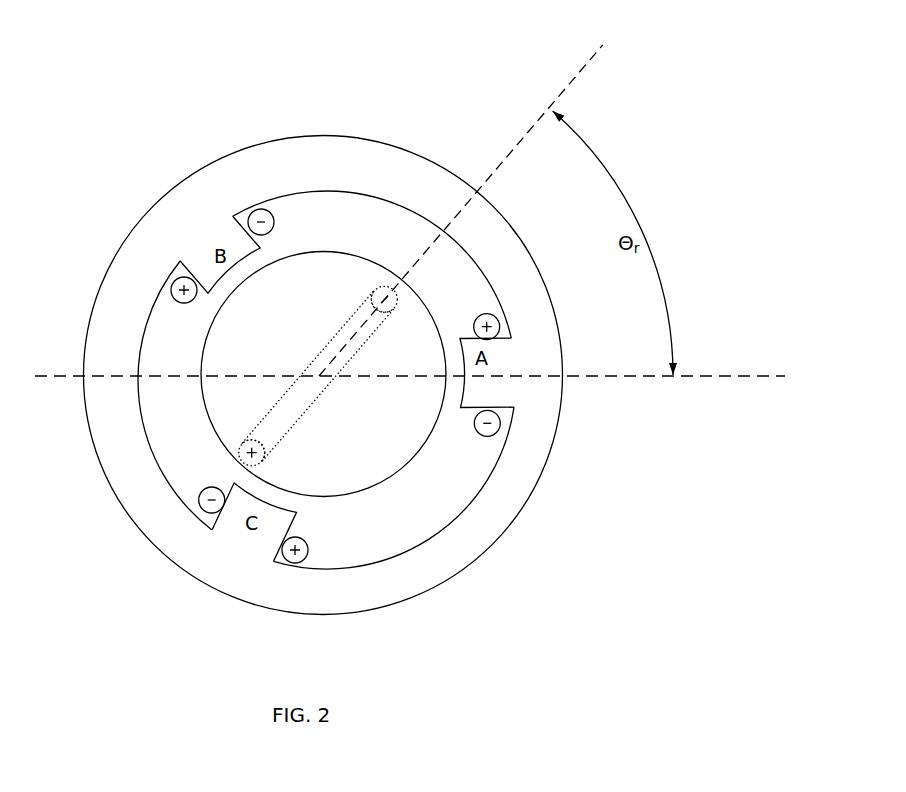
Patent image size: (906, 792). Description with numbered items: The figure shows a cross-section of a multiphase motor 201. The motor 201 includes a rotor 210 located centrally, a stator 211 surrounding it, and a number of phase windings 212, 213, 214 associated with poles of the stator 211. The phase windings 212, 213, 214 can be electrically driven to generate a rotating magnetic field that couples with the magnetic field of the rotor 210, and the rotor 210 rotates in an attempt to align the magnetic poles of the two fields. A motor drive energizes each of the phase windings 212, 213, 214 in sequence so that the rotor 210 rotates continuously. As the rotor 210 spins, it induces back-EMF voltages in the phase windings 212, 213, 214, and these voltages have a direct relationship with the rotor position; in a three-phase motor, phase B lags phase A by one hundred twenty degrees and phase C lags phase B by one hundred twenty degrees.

The multiphase motor 201 is at (395, 95).
The rotor 210 is at (355, 497).
The stator 211 is at (505, 214).
The phase winding 212 is at (500, 326).
The phase winding 213 is at (171, 282).
The phase winding 214 is at (290, 565).